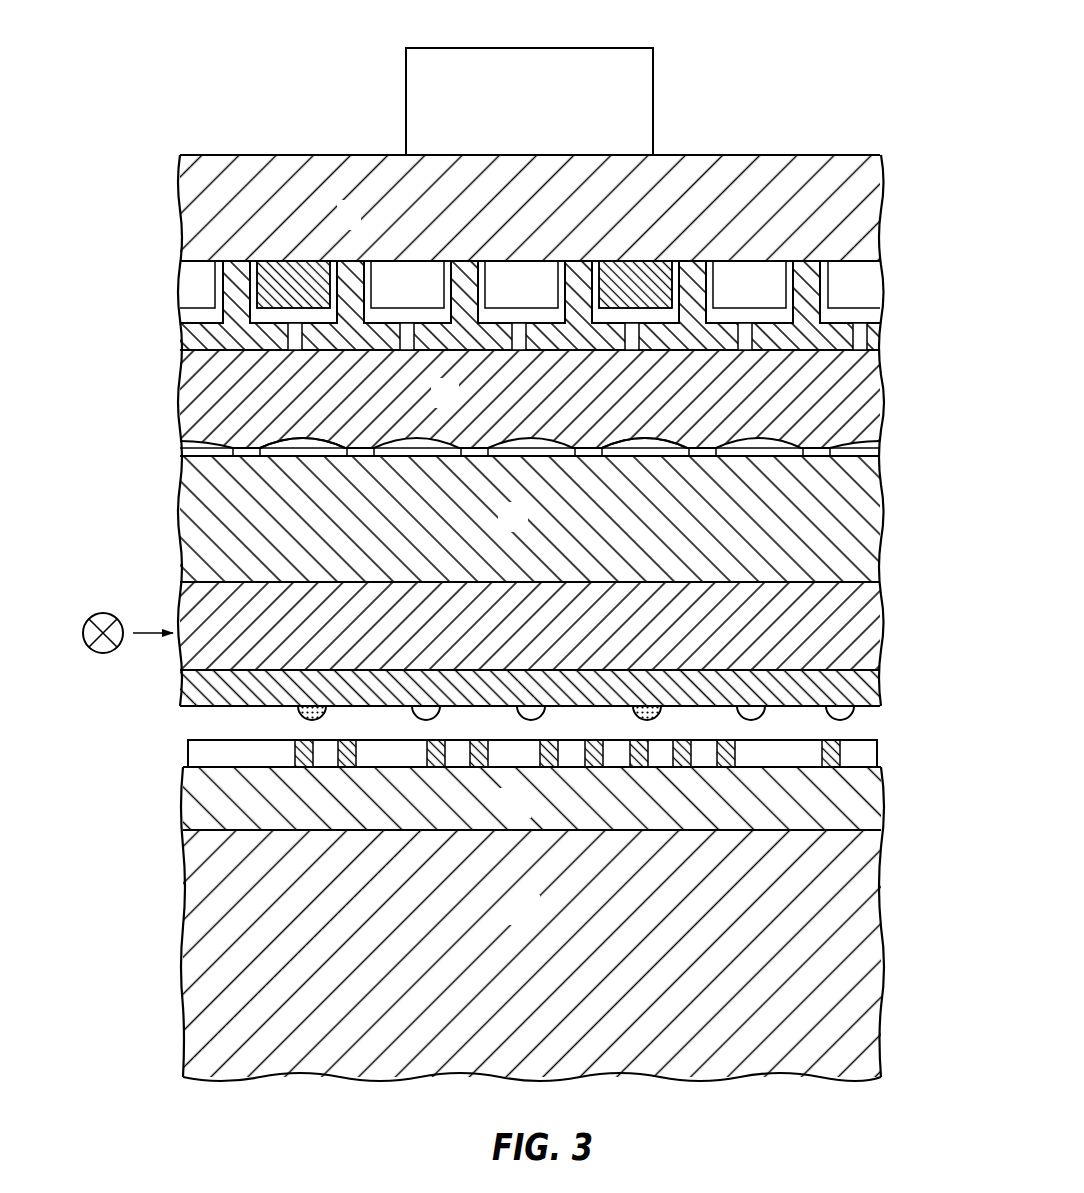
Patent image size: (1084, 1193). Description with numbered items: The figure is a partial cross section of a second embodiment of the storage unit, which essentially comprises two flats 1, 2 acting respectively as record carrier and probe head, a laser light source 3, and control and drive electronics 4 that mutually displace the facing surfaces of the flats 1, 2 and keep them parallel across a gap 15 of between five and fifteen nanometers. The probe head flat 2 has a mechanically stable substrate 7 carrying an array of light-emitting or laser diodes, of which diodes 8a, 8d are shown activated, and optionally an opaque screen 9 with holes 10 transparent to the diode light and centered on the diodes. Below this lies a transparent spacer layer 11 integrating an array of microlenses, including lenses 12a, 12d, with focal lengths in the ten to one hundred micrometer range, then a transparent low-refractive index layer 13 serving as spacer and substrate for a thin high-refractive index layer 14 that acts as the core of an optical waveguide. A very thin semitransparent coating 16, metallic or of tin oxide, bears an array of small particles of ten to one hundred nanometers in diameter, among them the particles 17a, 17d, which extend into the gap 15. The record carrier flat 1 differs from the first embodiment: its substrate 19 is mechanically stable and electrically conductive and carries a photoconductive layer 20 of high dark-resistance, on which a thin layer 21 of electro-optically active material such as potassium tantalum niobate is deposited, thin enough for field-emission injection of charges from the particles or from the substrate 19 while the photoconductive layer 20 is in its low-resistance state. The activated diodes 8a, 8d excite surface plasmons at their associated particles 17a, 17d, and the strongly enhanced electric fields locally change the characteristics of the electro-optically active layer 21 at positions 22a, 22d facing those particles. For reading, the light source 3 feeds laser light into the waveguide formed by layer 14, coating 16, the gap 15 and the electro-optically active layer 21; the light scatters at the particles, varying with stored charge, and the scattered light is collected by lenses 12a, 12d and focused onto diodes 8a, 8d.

The flat 1 is at (177, 953).
The flat 2 is at (173, 492).
The light source 3 is at (83, 634).
The control and drive electronics 4 is at (590, 57).
The substrate 7 is at (357, 227).
The diode 8a is at (290, 275).
The diode 8d is at (655, 265).
The opaque screen 9 is at (827, 345).
The holes 10 is at (635, 342).
The transparent spacer layer 11 is at (457, 405).
The lens 12a is at (293, 448).
The lens 12d is at (647, 448).
The transparent layer 13 is at (526, 529).
The high-refractive index layer 14 is at (183, 584).
The gap 15 is at (200, 723).
The semitransparent coating 16 is at (180, 695).
The particle 17a is at (327, 713).
The particle 17d is at (661, 712).
The substrate 19 is at (538, 922).
The photoconductive layer 20 is at (529, 815).
The electro-optically active layer 21 is at (187, 757).
The position 22a is at (301, 769).
The position 22d is at (636, 769).